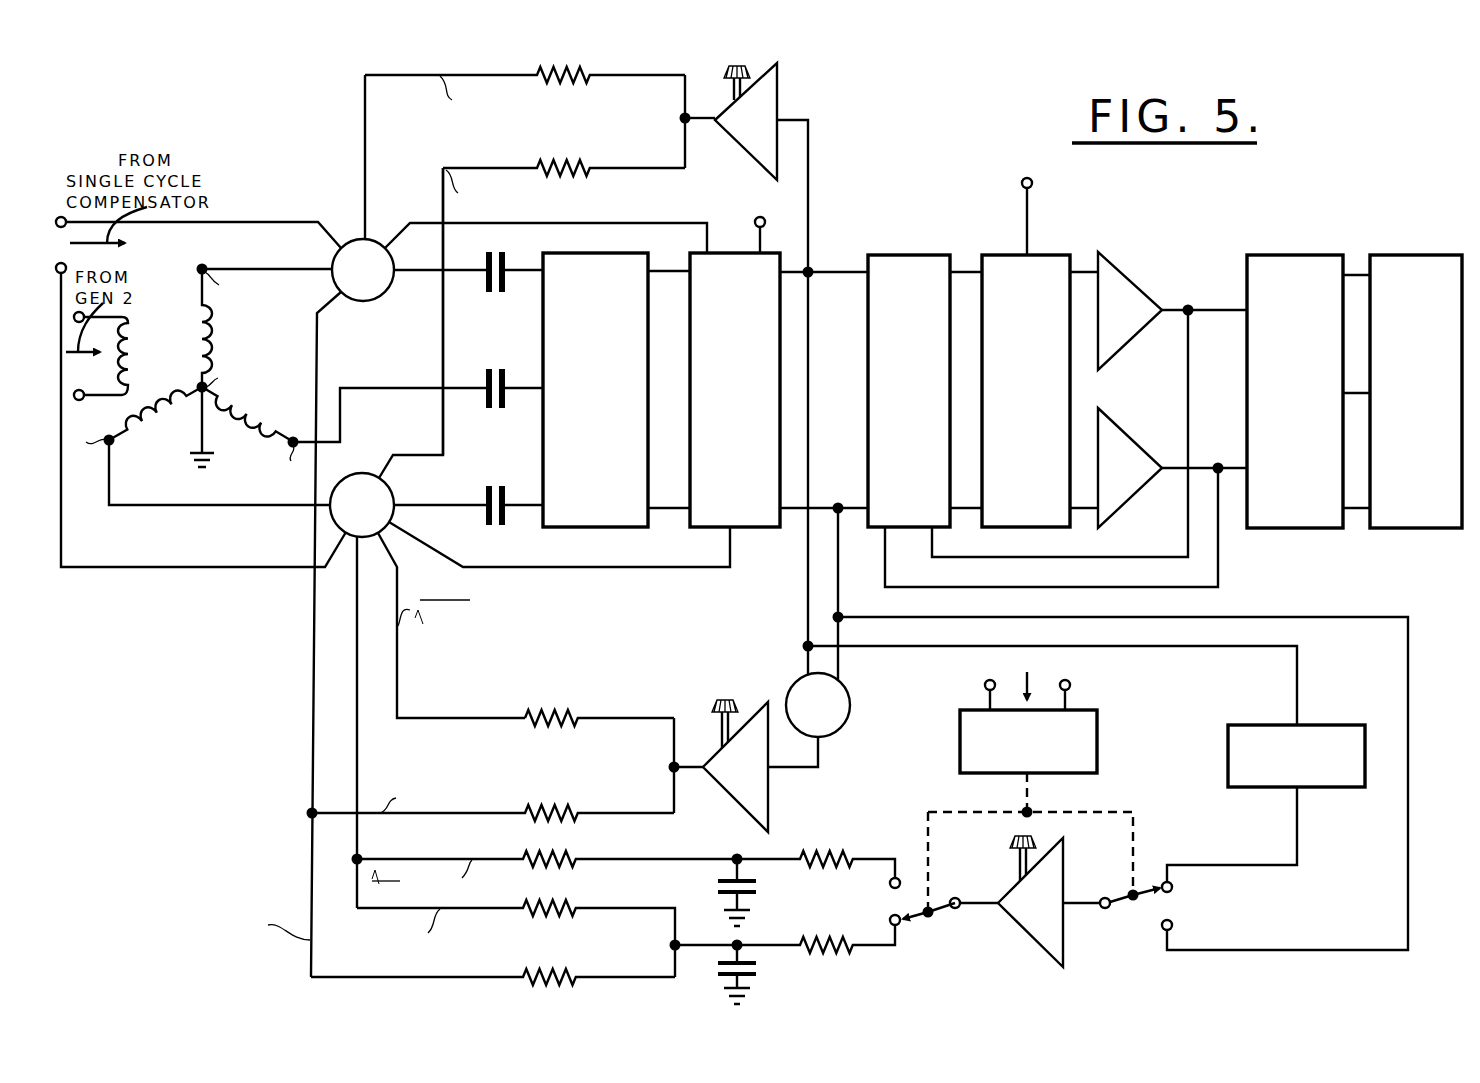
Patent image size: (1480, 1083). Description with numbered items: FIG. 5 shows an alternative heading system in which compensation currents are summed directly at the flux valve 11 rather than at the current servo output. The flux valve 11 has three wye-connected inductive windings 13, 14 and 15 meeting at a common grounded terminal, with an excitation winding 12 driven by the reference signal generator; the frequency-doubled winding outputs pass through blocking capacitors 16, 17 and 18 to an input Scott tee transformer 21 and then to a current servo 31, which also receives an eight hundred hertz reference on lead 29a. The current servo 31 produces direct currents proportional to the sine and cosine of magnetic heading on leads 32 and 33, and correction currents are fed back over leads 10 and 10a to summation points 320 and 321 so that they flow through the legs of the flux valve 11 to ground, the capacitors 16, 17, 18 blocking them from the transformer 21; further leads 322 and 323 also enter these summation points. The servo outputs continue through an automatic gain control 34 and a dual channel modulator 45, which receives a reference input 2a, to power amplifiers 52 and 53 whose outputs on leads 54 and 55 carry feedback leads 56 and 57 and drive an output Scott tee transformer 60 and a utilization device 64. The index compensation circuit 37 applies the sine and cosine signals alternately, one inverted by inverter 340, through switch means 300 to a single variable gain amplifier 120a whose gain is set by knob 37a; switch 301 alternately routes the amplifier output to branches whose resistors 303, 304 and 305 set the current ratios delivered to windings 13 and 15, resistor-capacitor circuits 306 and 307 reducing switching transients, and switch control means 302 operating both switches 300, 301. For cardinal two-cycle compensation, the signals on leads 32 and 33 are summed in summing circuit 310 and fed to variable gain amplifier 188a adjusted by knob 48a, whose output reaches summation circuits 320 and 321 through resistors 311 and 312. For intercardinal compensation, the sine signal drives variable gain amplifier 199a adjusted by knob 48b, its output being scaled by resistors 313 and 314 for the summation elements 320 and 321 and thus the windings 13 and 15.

The input terminal 2a is at (1031, 187).
The lead 10 is at (628, 567).
The lead 10a is at (488, 168).
The flux valve 11 is at (232, 441).
The excitation winding 12 is at (129, 349).
The inductive winding 13 is at (214, 348).
The inductive winding 14 is at (252, 411).
The inductive winding 15 is at (160, 424).
The blocking capacitor 16 is at (491, 294).
The blocking capacitor 17 is at (492, 410).
The blocking capacitor 18 is at (503, 527).
The input Scott tee transformer 21 is at (646, 254).
The lead 29a is at (752, 224).
The current servo 31 is at (768, 254).
The lead 32 is at (830, 278).
The lead 33 is at (795, 512).
The automatic gain control 34 is at (906, 256).
The index compensation circuit 37 is at (952, 810).
The adjustment knob 37a is at (1010, 843).
The dual channel modulator 45 is at (1045, 256).
The knob 48a is at (726, 700).
The knob 48b is at (722, 79).
The power amplifier 52 is at (1132, 283).
The power amplifier 53 is at (1129, 440).
The lead 54 is at (1218, 310).
The lead 55 is at (1218, 464).
The feedback lead 56 is at (1143, 557).
The feedback lead 57 is at (1225, 587).
The output Scott tee transformer 60 is at (1293, 255).
The utilization device 64 is at (1413, 255).
The variable gain amplifier 120a is at (1064, 928).
The variable gain amplifier 188a is at (769, 790).
The variable gain amplifier 199a is at (780, 73).
The switch means 300 is at (1175, 900).
The switch 301 is at (930, 920).
The switch control means 302 is at (1100, 748).
The resistor 303 is at (577, 859).
The resistor 304 is at (577, 908).
The resistor 305 is at (577, 977).
The resistor-capacitor circuit 306 is at (762, 880).
The resistor-capacitor circuit 307 is at (762, 953).
The summing circuit 310 is at (850, 702).
The resistor 311 is at (559, 718).
The resistor 312 is at (559, 813).
The resistor 313 is at (562, 82).
The resistor 314 is at (565, 176).
The summation point 320 is at (378, 298).
The summation point 321 is at (388, 481).
The conductor 322 is at (270, 222).
The conductor 323 is at (156, 567).
The inverter 340 is at (1337, 725).